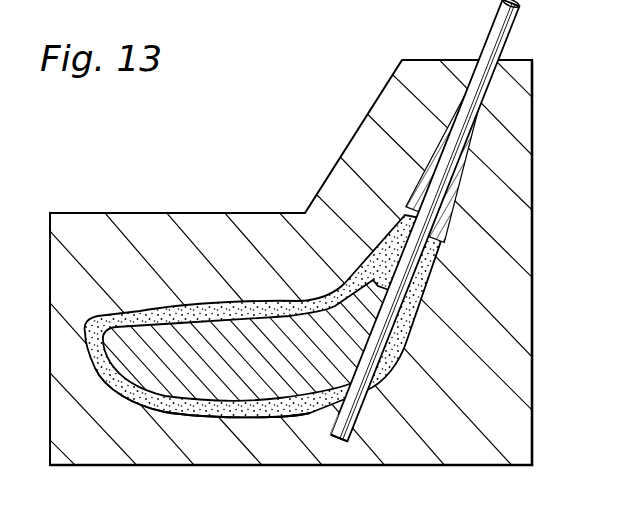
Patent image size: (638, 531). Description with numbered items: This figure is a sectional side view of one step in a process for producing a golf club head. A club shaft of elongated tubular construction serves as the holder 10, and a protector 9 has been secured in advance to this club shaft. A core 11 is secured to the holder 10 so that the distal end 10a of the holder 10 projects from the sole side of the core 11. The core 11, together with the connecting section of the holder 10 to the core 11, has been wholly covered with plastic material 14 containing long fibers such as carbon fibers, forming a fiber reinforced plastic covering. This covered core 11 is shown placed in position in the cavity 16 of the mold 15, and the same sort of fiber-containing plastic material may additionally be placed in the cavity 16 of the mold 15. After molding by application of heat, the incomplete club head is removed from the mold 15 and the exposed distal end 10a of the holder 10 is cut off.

The protector 9 is at (464, 173).
The holder 10 is at (512, 23).
The distal end 10a is at (347, 441).
The core 11 is at (207, 392).
The plastic material 14 is at (277, 304).
The mold 15 is at (362, 127).
The cavity 16 is at (145, 308).